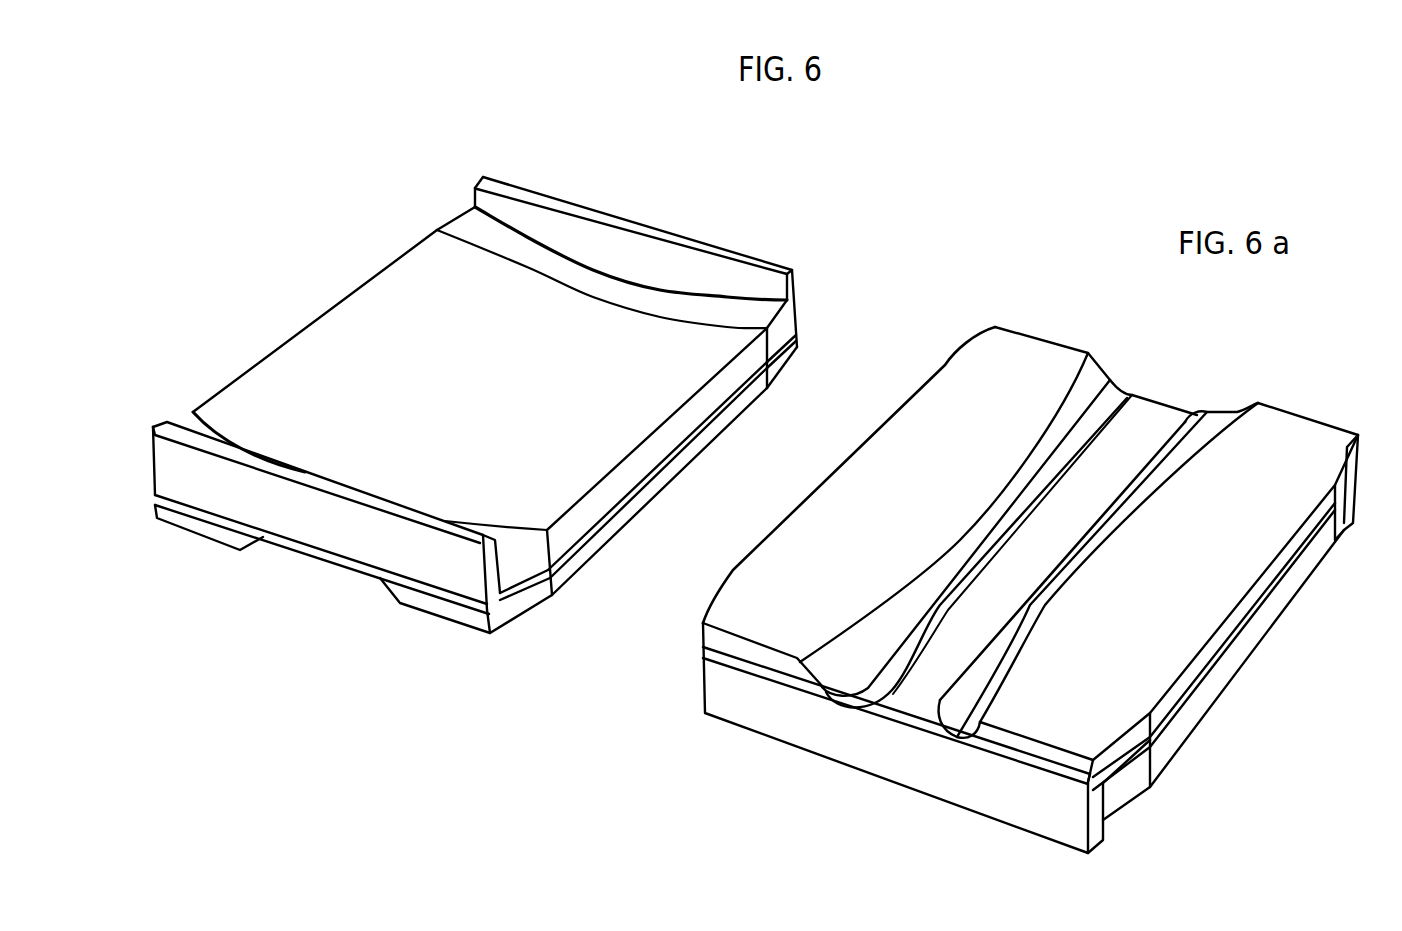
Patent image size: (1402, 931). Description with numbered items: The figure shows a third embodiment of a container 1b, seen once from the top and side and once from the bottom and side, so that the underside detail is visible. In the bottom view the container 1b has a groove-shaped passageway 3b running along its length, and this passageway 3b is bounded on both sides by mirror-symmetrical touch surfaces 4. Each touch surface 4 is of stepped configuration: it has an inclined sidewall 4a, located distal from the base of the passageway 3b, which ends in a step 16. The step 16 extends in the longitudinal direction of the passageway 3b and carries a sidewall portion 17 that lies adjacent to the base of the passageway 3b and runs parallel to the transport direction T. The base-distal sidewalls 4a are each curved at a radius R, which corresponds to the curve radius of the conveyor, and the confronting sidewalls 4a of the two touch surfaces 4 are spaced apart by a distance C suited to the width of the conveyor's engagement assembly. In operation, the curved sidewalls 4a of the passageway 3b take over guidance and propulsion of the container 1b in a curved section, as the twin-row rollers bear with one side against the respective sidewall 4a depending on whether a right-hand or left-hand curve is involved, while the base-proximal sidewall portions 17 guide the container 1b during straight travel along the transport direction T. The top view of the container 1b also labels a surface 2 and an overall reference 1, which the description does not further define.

In FIG. 6, the container 1b is at (690, 191).
In FIG. 6, the contact surface 2 is at (357, 300).
In FIG. 6, the groove-shaped passageway 3b is at (318, 561).
In FIG. 6a, the groove-shaped passageway 3b is at (1178, 402).
In FIG. 6, the sidewall portion 17 is at (360, 570).
In FIG. 6a, the sidewall portion 17 is at (1132, 397).
In FIG. 6, the inclined sidewall 4a is at (388, 600).
In FIG. 6a, the inclined sidewall 4a is at (1072, 410).
In FIG. 6a, the tool 1 is at (1288, 307).
In FIG. 6a, the step 16 is at (1118, 393).
In FIG. 6a, the radius R is at (1010, 530).
In FIG. 6a, the distance C is at (1067, 482).
In FIG. 6a, the touch surfaces 4 is at (1015, 637).
In FIG. 6a, the transport direction T is at (828, 800).